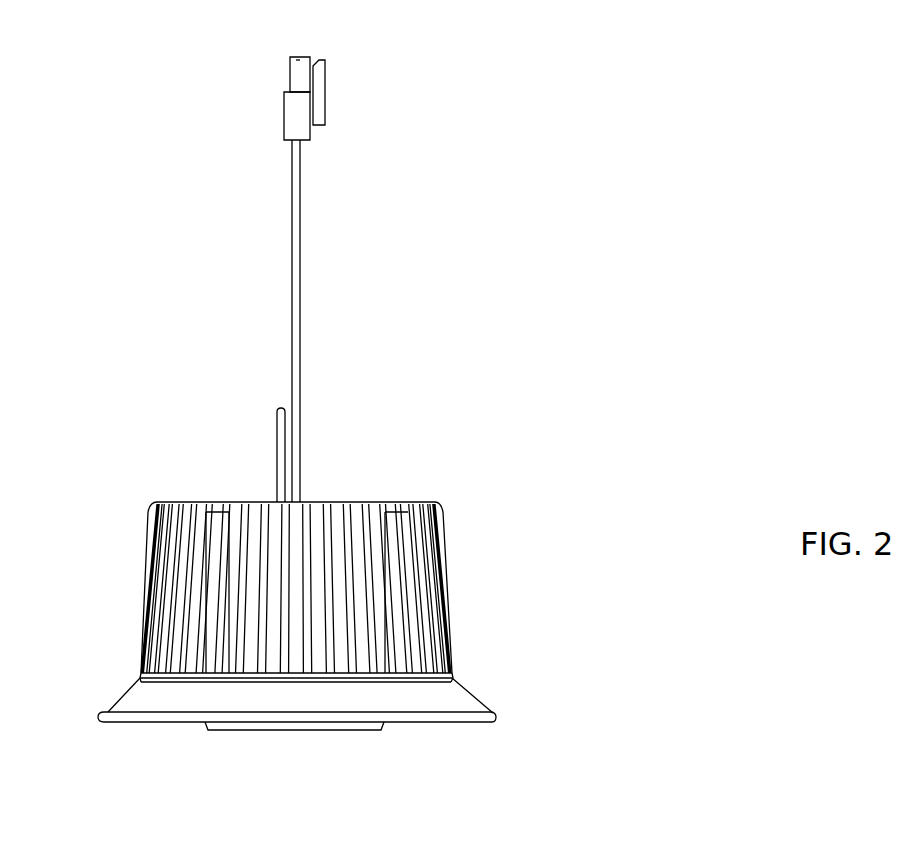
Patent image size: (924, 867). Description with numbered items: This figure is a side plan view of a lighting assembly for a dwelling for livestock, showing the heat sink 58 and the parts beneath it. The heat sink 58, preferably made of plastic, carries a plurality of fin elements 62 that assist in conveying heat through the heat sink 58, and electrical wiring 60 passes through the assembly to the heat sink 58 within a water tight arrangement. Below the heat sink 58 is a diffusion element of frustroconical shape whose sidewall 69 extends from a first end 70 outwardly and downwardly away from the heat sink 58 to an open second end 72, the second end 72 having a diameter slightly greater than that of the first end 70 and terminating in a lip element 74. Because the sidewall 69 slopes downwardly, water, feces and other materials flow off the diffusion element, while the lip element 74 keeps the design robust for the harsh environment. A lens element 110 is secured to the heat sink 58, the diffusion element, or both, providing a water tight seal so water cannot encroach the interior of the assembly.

The electrical wiring 60 is at (300, 262).
The fin elements 62 is at (438, 517).
The heat sink 58 is at (413, 550).
The first end 70 is at (447, 672).
The sidewall 69 is at (463, 706).
The lip element 74 is at (490, 713).
The open second end 72 is at (494, 722).
The lens element 110 is at (337, 728).